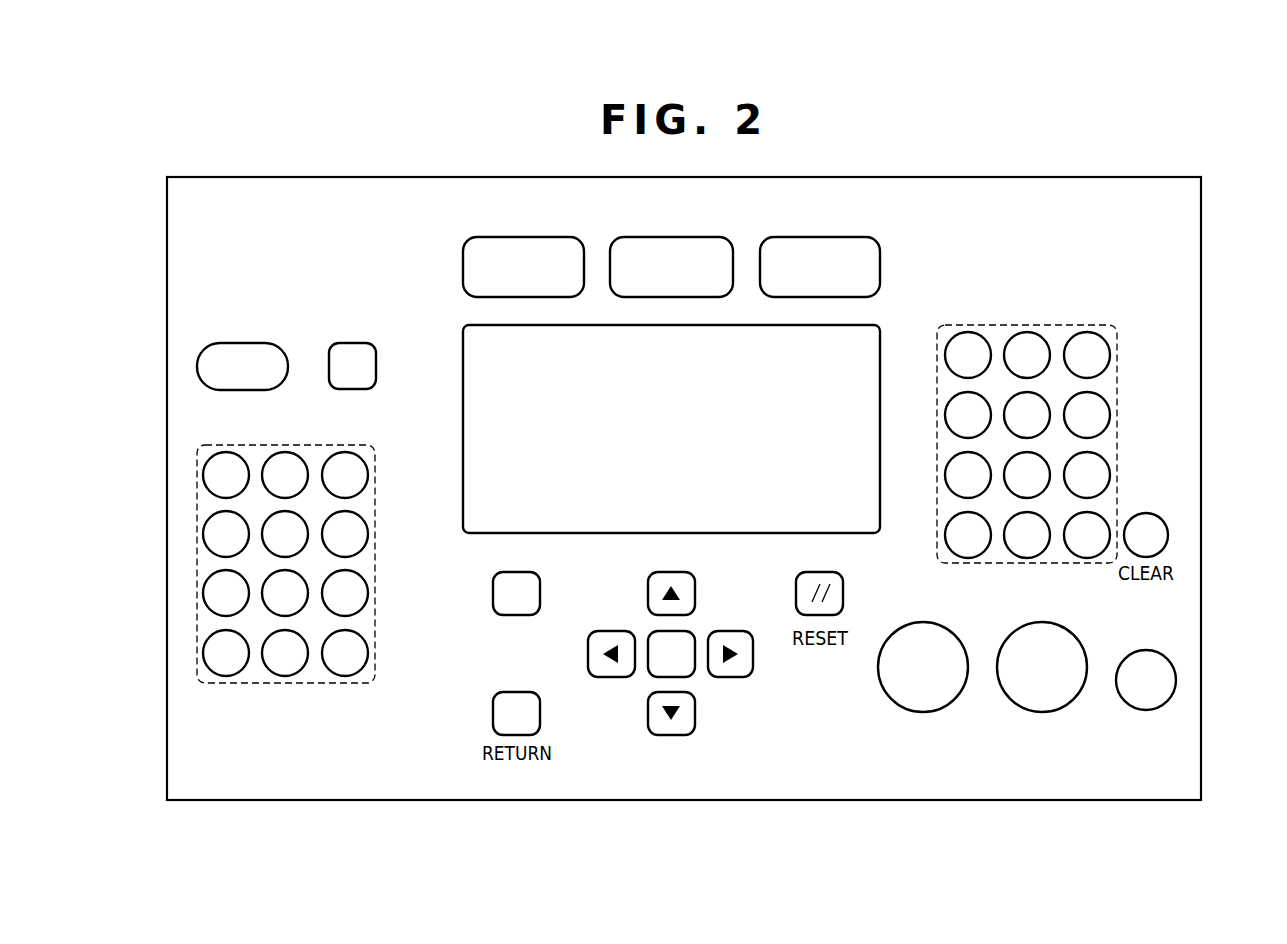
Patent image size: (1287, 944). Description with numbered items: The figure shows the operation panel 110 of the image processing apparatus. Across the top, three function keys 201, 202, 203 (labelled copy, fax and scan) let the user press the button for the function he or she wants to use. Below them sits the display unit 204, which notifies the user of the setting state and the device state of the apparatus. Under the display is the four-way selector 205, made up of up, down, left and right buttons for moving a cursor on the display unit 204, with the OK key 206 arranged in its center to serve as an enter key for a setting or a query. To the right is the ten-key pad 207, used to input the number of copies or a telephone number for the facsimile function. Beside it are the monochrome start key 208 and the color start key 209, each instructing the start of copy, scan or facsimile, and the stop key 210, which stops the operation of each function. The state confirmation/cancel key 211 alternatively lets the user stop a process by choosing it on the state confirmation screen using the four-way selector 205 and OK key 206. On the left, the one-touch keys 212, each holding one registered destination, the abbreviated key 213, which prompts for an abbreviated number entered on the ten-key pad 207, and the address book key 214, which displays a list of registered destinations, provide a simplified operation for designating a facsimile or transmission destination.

The operation panel 110 is at (1202, 272).
The function key 201 is at (541, 237).
The function key 202 is at (681, 237).
The function key 203 is at (844, 237).
The display unit 204 is at (463, 352).
The 4-way selector 205 is at (697, 714).
The OK key 206 is at (692, 633).
The ten-key pad 207 is at (1088, 325).
The monochrome start key 208 is at (903, 623).
The color start key 209 is at (1021, 623).
The stop key 210 is at (1143, 650).
The state confirmation/cancel key 211 is at (493, 588).
The one-touch keys 212 is at (376, 481).
The abbreviated key 213 is at (352, 343).
The address book key 214 is at (252, 343).